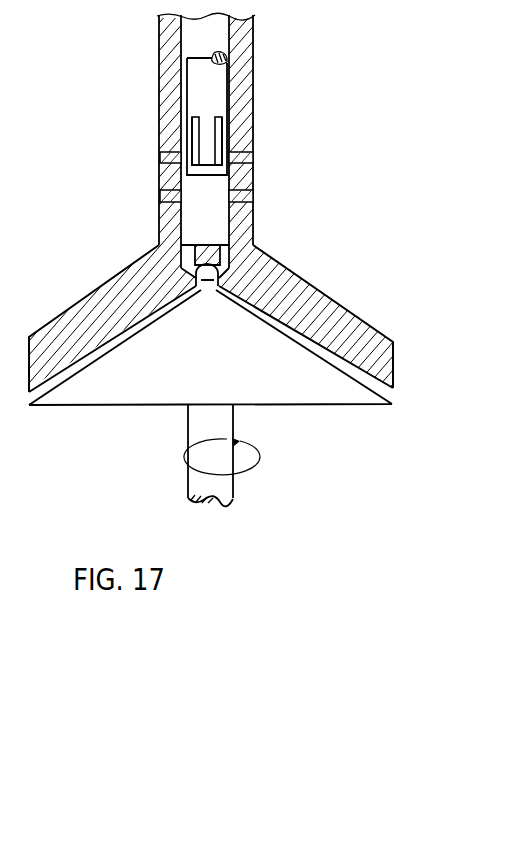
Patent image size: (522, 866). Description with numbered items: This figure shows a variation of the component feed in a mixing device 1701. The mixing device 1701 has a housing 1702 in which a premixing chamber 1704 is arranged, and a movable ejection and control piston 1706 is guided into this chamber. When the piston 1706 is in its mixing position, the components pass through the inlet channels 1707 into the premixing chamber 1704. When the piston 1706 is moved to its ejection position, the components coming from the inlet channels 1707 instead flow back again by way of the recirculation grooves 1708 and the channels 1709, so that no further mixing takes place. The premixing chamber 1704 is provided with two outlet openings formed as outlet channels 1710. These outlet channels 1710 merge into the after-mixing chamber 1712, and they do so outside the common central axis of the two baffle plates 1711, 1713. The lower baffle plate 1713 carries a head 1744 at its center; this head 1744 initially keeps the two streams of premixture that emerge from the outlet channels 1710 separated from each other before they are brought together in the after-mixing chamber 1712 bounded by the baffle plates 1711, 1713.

The mixing device 1701 is at (270, 45).
The housing 1702 is at (242, 88).
The premixing chamber 1704 is at (218, 217).
The ejection and control piston 1706 is at (197, 88).
The inlet channels 1707 is at (172, 196).
The recirculation grooves 1708 is at (190, 142).
The channels 1709 is at (178, 160).
The outlet channels 1710 is at (193, 256).
The baffle plate 1711 is at (300, 288).
The after-mixing chamber 1712 is at (337, 358).
The baffle plate 1713 is at (332, 390).
The head 1744 is at (213, 285).